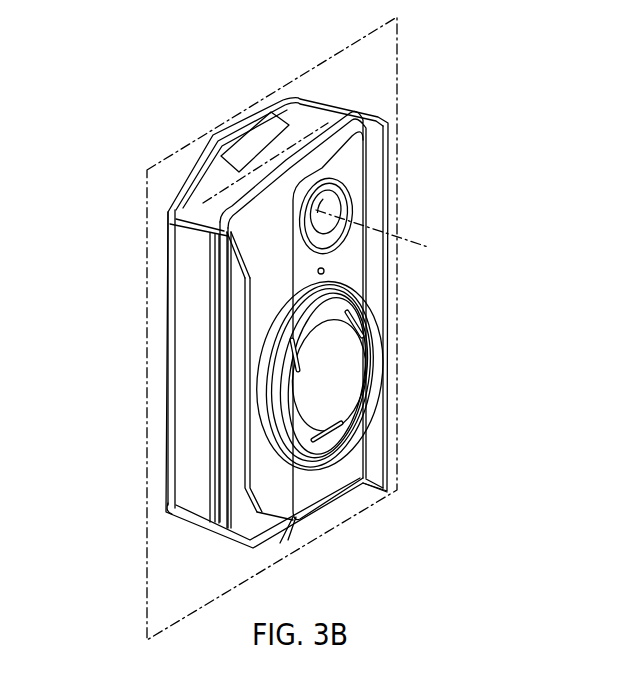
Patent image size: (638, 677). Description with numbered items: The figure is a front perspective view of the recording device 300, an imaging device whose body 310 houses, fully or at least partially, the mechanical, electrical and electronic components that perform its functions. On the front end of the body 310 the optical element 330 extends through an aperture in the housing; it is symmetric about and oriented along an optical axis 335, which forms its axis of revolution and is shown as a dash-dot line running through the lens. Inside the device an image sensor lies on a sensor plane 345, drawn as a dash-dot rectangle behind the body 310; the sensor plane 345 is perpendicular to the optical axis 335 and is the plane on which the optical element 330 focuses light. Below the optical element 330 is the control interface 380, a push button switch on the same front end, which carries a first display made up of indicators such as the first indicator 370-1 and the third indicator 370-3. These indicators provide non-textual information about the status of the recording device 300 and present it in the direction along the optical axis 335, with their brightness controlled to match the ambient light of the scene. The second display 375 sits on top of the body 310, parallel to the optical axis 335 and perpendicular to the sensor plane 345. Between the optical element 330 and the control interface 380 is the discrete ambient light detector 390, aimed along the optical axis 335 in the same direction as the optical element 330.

The recording device 300 is at (478, 140).
The body 310 is at (220, 134).
The optical element 330 is at (343, 207).
The optical axis 335 is at (426, 246).
The sensor plane 345 is at (400, 96).
The first indicator 370-1 is at (364, 336).
The third indicator 370-3 is at (290, 370).
The second display 375 is at (306, 117).
The control interface 380 is at (348, 379).
The ambient light detector 390 is at (326, 272).